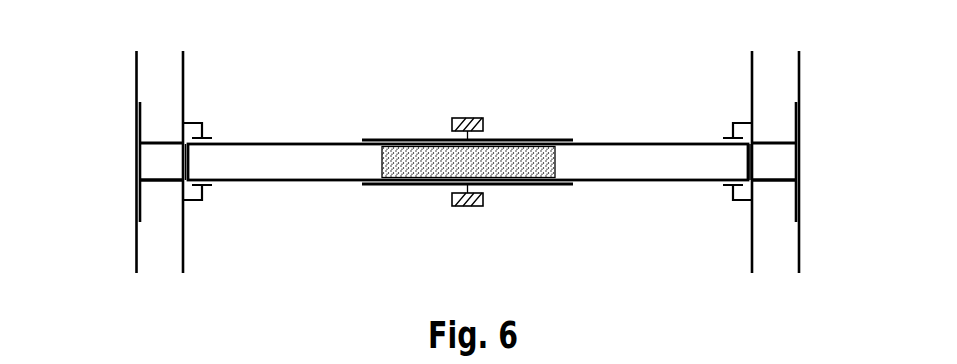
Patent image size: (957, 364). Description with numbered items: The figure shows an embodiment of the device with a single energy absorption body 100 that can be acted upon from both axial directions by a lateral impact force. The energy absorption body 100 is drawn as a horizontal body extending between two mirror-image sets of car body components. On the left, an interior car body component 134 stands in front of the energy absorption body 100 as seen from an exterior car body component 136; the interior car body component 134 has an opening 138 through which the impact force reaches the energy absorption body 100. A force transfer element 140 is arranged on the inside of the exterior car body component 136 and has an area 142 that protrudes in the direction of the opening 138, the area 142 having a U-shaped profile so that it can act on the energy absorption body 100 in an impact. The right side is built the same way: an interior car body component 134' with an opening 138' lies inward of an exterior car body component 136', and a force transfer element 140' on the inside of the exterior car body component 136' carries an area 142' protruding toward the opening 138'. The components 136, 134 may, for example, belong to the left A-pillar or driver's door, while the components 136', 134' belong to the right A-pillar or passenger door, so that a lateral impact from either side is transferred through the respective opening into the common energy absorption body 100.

The energy absorption body 100 is at (517, 124).
The interior car body component 134 is at (225, 160).
The exterior car body component 136 is at (93, 160).
The opening 138 is at (169, 104).
The force transfer element 140 is at (118, 160).
The area 142 is at (135, 227).
The interior car body component 134' is at (707, 160).
The exterior car body component 136' is at (843, 160).
The opening 138' is at (777, 104).
The force transfer element 140' is at (817, 160).
The area 142' is at (802, 227).